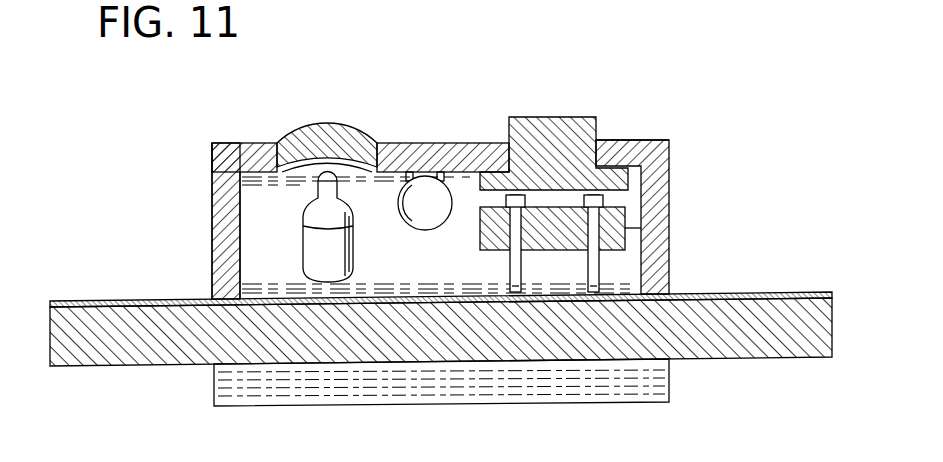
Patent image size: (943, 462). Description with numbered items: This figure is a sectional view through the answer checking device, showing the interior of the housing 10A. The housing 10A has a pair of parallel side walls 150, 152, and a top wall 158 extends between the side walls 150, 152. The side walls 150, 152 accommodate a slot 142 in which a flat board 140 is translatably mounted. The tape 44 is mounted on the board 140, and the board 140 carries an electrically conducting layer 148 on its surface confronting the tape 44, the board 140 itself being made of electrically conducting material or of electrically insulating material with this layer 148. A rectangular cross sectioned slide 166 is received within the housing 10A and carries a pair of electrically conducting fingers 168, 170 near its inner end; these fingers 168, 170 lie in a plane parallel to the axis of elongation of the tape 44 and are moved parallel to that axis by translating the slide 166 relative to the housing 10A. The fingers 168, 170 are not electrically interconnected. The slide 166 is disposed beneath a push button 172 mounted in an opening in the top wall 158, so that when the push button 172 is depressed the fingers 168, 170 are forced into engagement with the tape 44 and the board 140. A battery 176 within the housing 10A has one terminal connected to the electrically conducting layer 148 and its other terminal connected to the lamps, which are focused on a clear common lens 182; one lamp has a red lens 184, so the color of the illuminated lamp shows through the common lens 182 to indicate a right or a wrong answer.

The housing 10A is at (218, 230).
The tape 44 is at (405, 293).
The flat board 140 is at (393, 365).
The slot 142 is at (215, 280).
The electrically conducting layer 148 is at (807, 267).
The side wall 150 is at (225, 190).
The side wall 152 is at (669, 183).
The top wall 158 is at (643, 140).
The slide 166 is at (669, 218).
The electrically conducting finger 168 is at (510, 263).
The electrically conducting finger 170 is at (590, 262).
The push button 172 is at (573, 118).
The battery 176 is at (455, 142).
The common lens 182 is at (302, 127).
The lens 184 is at (238, 212).